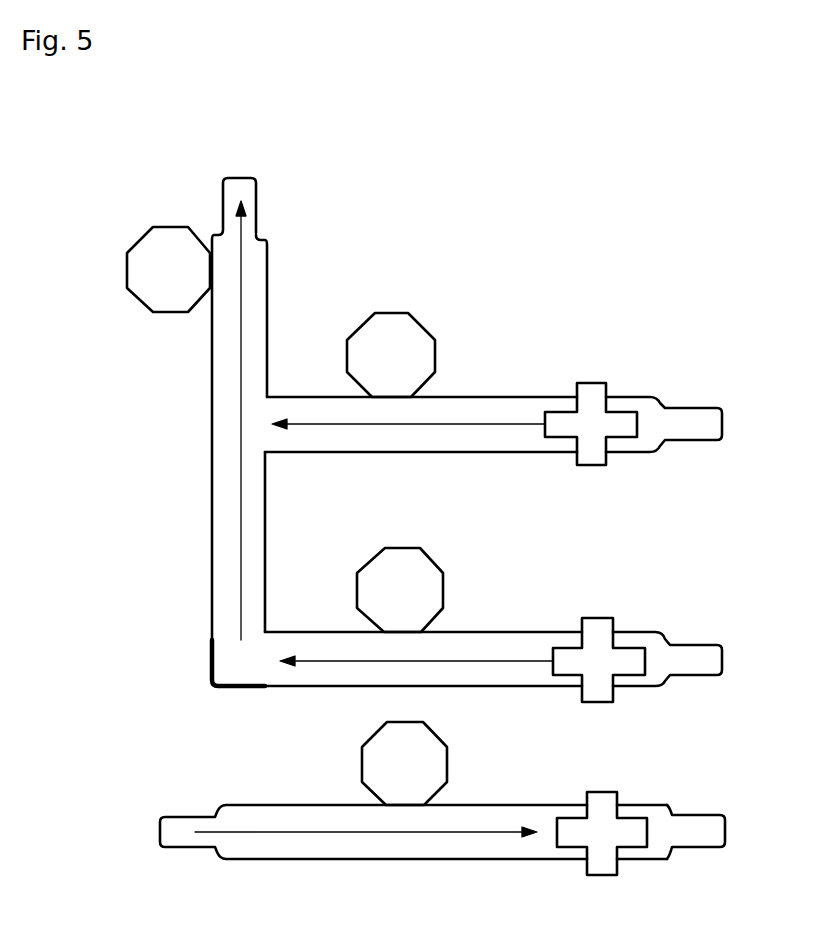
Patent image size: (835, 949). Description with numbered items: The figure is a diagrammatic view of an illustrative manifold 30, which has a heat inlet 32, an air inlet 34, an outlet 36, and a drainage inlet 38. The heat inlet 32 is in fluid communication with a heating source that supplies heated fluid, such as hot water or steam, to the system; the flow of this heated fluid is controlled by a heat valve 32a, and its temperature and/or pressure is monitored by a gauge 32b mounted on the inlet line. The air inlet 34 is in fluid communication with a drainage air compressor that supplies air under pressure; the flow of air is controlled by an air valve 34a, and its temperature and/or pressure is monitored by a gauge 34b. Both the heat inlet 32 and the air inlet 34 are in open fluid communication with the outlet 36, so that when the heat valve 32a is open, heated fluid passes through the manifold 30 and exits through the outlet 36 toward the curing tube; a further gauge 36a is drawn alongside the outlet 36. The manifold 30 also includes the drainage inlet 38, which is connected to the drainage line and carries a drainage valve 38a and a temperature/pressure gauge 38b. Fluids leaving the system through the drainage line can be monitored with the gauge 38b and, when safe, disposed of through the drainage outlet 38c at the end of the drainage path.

The manifold 30 is at (680, 156).
The heat inlet 32 is at (722, 426).
The heat valve 32a is at (590, 383).
The gauge 32b is at (391, 313).
The air inlet 34 is at (722, 663).
The air valve 34a is at (593, 618).
The gauge 34b is at (393, 548).
The outlet 36 is at (256, 210).
The outlet pressure gauge 36a is at (127, 277).
The drainage inlet 38 is at (160, 826).
The drainage valve 38a is at (600, 875).
The temperature/pressure gauge 38b is at (362, 760).
The drainage outlet 38c is at (725, 833).